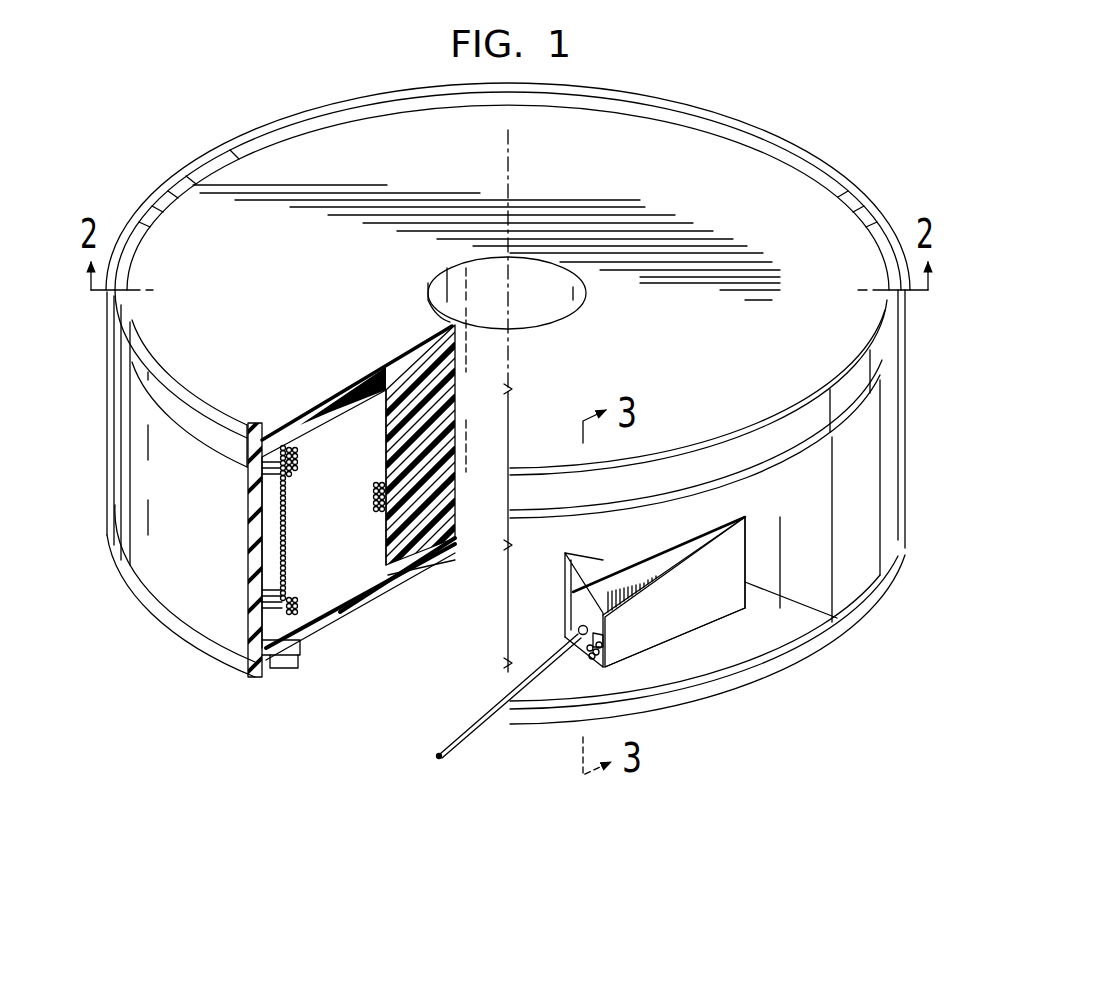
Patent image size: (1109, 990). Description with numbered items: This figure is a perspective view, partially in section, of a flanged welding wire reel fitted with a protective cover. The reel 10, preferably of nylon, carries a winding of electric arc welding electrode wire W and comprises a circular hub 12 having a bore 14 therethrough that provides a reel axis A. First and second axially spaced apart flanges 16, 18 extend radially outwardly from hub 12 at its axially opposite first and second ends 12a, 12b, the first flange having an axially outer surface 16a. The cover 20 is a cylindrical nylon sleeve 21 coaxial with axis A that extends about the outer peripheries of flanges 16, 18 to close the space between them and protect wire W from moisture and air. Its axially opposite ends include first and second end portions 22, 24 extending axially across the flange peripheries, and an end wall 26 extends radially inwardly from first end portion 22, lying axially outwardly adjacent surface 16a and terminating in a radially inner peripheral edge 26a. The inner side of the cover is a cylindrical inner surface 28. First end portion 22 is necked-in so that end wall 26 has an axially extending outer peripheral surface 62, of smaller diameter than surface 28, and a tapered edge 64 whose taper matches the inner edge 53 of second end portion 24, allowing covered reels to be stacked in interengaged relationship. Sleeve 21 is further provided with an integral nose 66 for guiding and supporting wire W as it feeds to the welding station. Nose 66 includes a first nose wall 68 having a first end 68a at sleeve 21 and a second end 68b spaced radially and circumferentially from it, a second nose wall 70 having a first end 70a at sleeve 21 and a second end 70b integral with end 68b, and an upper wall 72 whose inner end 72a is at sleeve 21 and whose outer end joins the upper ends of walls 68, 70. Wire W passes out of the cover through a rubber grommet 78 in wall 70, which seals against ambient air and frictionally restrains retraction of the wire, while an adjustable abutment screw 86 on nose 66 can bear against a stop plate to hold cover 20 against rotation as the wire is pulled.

The reel 10 is at (390, 598).
The circular hub 12 is at (425, 355).
The first end of hub 12a is at (413, 575).
The second end of hub 12b is at (400, 350).
The bore 14 is at (580, 317).
The first flange 16 is at (345, 614).
The axially outer surface of reel flange 16a is at (358, 606).
The second flange 18 is at (322, 398).
The cover 20 is at (170, 646).
The sleeve 21 is at (165, 573).
The first end portion 22 is at (216, 658).
The second end portion 24 is at (196, 437).
The end wall 26 is at (285, 657).
The radially inner peripheral edge 26a is at (310, 668).
The cylindrical inner surface 28 is at (260, 528).
The inner edge of second end portion 53 is at (753, 133).
The outer peripheral surface 62 is at (737, 684).
The tapered edge 64 is at (803, 643).
The nose 66 is at (692, 652).
The first nose wall 68 is at (700, 612).
The first end of first nose wall 68a is at (832, 620).
The second end of first nose wall 68b is at (617, 663).
The second nose wall 70 is at (578, 610).
The first end of second nose wall 70a is at (562, 590).
The second end of second nose wall 70b is at (597, 672).
The upper wall 72 is at (637, 573).
The inner end of upper wall 72a is at (682, 540).
The grommet 78 is at (586, 624).
The adjustable abutment screw 86 is at (584, 652).
The reel axis A is at (510, 164).
The electric arc welding electrode wire W is at (275, 473).